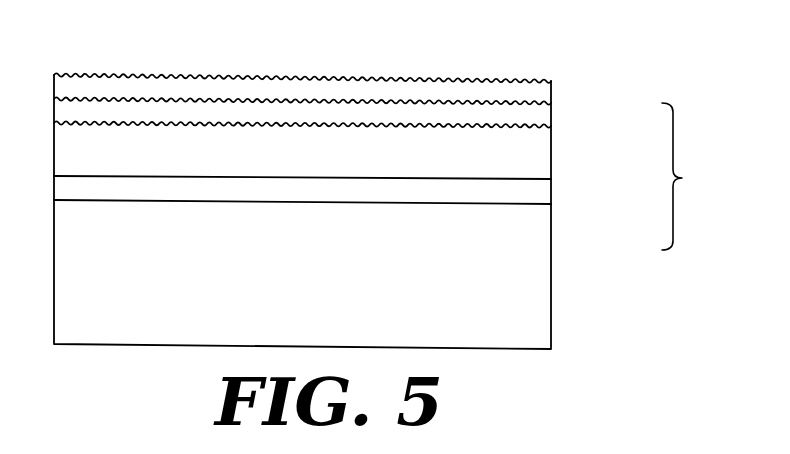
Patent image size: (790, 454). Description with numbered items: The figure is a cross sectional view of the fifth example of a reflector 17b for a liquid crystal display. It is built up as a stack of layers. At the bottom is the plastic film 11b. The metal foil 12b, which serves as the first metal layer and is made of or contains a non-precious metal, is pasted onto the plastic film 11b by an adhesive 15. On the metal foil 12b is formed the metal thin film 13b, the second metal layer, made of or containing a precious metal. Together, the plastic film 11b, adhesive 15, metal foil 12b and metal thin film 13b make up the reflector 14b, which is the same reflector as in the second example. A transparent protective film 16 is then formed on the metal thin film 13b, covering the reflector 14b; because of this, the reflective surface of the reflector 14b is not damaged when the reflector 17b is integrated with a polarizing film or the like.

The reflector for a liquid crystal display 17b is at (460, 34).
The transparent protective film 16 is at (551, 93).
The metal thin film 13b is at (551, 113).
The metal foil 12b is at (551, 155).
The adhesive 15 is at (551, 192).
The plastic film 11b is at (551, 240).
The reflector 14b is at (702, 176).